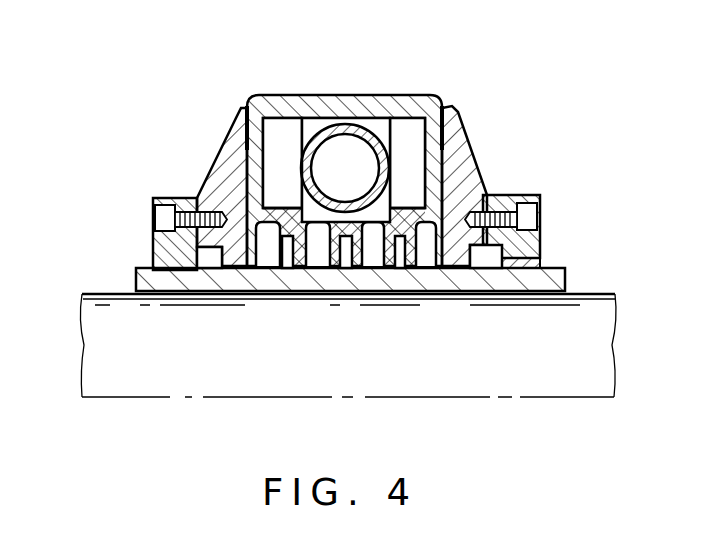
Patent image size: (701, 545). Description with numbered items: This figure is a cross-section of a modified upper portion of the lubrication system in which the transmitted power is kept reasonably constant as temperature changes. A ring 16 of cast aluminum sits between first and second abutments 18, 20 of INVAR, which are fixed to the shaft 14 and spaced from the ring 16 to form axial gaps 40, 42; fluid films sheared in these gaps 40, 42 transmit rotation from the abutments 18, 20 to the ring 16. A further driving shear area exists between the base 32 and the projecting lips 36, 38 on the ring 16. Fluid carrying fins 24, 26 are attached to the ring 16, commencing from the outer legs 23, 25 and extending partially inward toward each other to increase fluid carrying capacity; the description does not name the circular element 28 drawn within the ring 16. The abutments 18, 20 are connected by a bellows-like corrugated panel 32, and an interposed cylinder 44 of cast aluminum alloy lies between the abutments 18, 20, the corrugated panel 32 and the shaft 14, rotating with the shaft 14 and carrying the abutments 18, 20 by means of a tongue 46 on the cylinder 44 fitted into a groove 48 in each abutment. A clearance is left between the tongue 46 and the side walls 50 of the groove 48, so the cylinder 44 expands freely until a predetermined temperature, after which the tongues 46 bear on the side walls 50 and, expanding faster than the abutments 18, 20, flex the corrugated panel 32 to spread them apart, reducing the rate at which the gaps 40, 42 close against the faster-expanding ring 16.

The shaft 14 is at (148, 383).
The ring 16 is at (423, 75).
The first abutment 18 is at (222, 145).
The second abutment 20 is at (473, 152).
The outer leg 23 is at (278, 120).
The fluid carrying fin 24 is at (298, 226).
The outer leg 25 is at (427, 147).
The fluid carrying fin 26 is at (412, 192).
The tube 28 is at (316, 130).
The corrugated panel 32 is at (355, 240).
The projecting lip 36 is at (282, 192).
The projecting lip 38 is at (431, 244).
The axial gap 40 is at (248, 107).
The axial gap 42 is at (442, 107).
The interposed cylinder 44 is at (530, 276).
The tongue 46 is at (213, 256).
The groove 48 is at (195, 197).
The side wall 50 is at (195, 258).